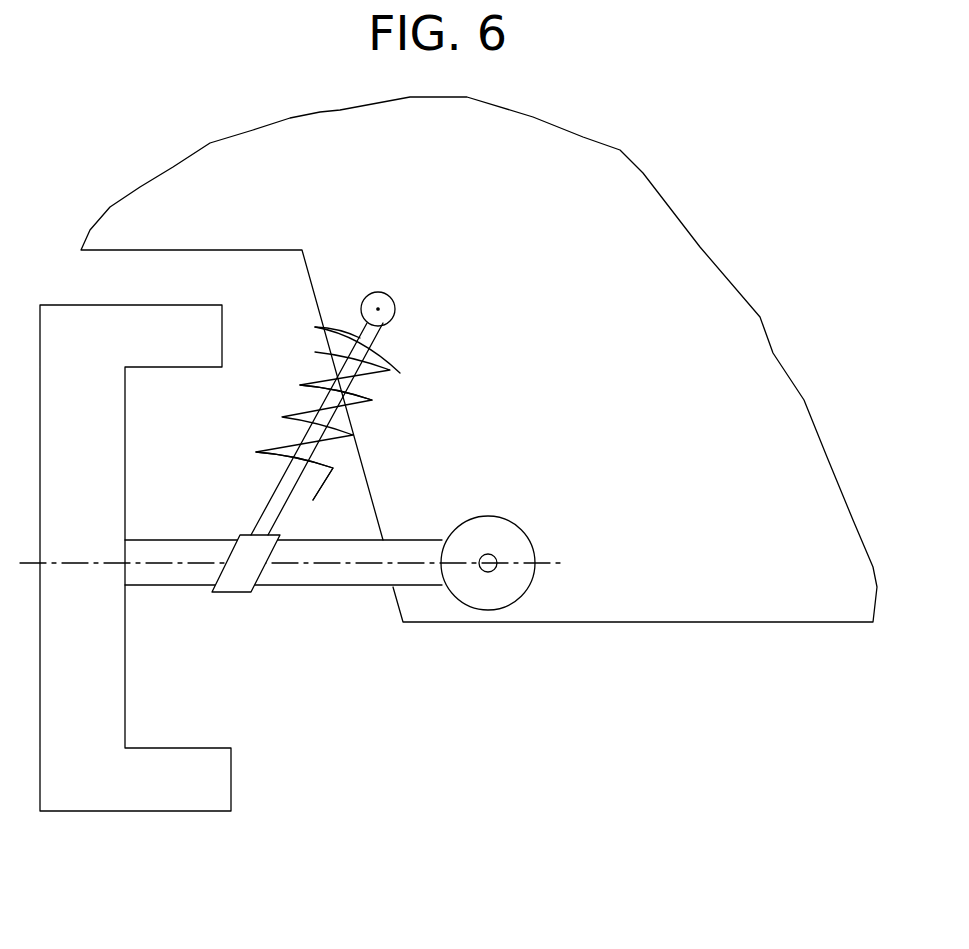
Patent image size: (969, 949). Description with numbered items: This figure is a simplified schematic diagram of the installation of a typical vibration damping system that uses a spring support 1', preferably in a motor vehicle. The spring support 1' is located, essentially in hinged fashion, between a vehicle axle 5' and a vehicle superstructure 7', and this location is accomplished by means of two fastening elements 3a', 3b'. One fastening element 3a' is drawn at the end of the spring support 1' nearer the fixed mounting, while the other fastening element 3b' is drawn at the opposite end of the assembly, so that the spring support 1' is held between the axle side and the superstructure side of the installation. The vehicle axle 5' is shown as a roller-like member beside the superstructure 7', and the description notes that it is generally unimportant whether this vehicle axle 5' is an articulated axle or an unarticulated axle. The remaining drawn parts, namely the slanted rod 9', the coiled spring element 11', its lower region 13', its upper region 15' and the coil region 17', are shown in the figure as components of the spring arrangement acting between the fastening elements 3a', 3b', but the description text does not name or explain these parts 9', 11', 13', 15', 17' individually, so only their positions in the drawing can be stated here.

The spring support 1' is at (290, 592).
The fastening element 3a' is at (246, 625).
The fastening element 3b' is at (432, 296).
The vehicle axle 5' is at (470, 529).
The vehicle superstructure 7' is at (479, 420).
The spring rod 9' is at (285, 429).
The coil spring 11' is at (373, 413).
The spring lower end 13' is at (294, 549).
The spring upper end 15' is at (360, 274).
The spring coil 17' is at (274, 407).